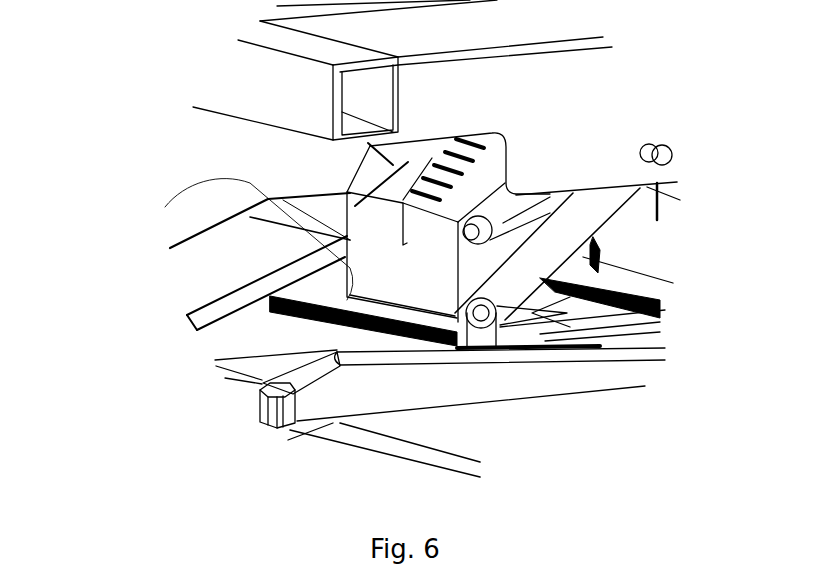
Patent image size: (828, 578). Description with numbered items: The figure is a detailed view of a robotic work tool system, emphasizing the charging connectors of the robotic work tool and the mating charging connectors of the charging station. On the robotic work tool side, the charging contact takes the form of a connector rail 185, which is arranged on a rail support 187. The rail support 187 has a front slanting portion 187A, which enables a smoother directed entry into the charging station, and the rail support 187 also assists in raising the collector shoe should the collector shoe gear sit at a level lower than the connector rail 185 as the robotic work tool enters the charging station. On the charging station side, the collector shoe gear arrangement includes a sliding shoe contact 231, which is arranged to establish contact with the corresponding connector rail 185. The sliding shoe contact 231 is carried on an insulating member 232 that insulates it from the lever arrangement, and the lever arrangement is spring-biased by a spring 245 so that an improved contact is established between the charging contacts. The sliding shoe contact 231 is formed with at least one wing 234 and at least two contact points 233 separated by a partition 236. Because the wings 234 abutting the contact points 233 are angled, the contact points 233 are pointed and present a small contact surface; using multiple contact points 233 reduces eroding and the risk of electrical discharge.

The spring 245 is at (365, 163).
The insulating member 232 is at (152, 207).
The sliding shoe contact 231 is at (272, 300).
The contact points 233 is at (457, 363).
The wing 234 is at (535, 368).
The connector rail 185 is at (355, 365).
The partition 236 is at (617, 400).
The front slanting portion 187A is at (215, 360).
The rail support 187 is at (258, 422).